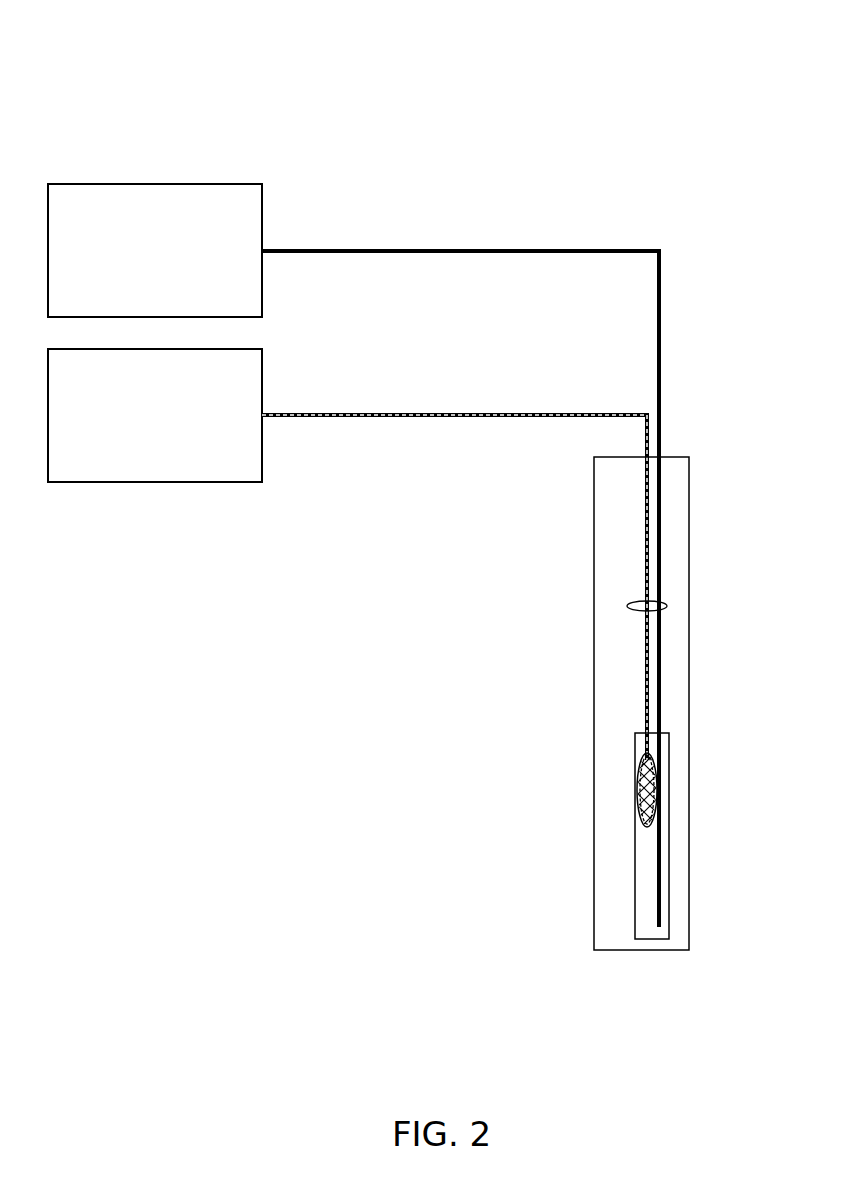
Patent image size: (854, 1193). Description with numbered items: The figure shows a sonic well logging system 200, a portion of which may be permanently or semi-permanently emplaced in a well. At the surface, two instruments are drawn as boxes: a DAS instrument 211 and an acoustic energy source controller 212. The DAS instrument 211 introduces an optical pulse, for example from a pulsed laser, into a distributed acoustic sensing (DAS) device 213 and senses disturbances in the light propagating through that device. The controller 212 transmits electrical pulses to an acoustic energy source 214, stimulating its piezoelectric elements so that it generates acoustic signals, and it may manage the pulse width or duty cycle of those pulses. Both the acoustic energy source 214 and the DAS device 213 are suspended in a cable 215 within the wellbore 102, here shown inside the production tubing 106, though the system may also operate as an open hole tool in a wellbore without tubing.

The sonic well logging system 200 is at (543, 92).
The DAS instrument 211 is at (175, 267).
The acoustic energy source controller 212 is at (175, 428).
The distributed acoustic sensing (DAS) device 213 is at (661, 303).
The wellbore 102 is at (594, 500).
The production tubing 106 is at (635, 884).
The cable 215 is at (627, 606).
The acoustic energy source 214 is at (637, 785).